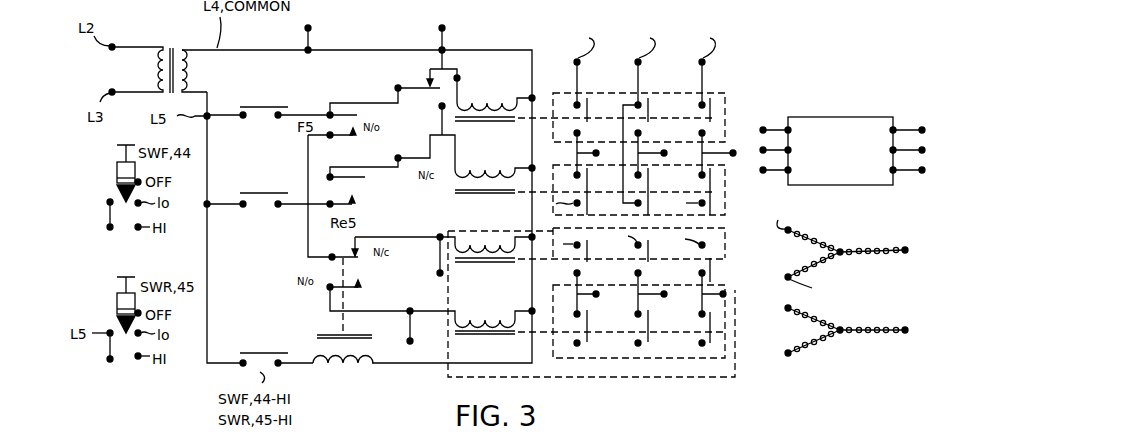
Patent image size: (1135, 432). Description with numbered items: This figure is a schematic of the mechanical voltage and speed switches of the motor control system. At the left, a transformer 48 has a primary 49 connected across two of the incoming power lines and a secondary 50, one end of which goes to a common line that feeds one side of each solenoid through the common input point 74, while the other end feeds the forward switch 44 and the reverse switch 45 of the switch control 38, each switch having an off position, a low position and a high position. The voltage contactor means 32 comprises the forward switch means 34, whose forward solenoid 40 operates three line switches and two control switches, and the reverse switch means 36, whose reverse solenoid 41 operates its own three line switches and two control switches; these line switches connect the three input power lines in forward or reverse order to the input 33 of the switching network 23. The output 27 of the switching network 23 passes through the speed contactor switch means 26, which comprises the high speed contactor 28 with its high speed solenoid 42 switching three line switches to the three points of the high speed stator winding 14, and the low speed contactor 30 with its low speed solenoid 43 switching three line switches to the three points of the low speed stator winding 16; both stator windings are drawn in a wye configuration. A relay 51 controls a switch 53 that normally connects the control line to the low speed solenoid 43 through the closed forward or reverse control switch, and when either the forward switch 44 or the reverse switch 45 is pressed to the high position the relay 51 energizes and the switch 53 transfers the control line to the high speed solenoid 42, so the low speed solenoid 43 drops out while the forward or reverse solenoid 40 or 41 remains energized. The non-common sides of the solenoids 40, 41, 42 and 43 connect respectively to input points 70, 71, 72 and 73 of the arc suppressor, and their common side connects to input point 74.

The transformer T1 48 is at (170, 40).
The primary 49 is at (147, 70).
The secondary 50 is at (197, 71).
The forward switch SWF 44 is at (268, 106).
The reverse switch SWR 45 is at (255, 206).
The input point 74 is at (313, 28).
The input point 70 is at (447, 28).
The solenoid F 40 is at (459, 78).
The solenoid Re 41 is at (554, 164).
The input point 71 is at (440, 110).
The switch 53 is at (352, 272).
The input point 73 is at (440, 278).
The input point 72 is at (408, 342).
The relay 51 is at (352, 363).
The solenoid lo 43 is at (486, 246).
The solenoid hi 42 is at (491, 311).
The switch control 38 is at (205, 374).
The forward voltage contactor switch means 34 is at (714, 93).
The voltage contactor means 32 is at (750, 86).
The reverse voltage contactor switch means 36 is at (722, 203).
The low speed stator contactor 30 is at (728, 230).
The high speed stator contactor 28 is at (724, 353).
The speed contactor switch means 26 is at (705, 382).
The input 33 is at (818, 117).
The output 27 is at (873, 117).
The switching network 23 is at (851, 166).
The low speed stator winding means lo 16 is at (830, 234).
The high speed stator winding means hi 14 is at (840, 347).